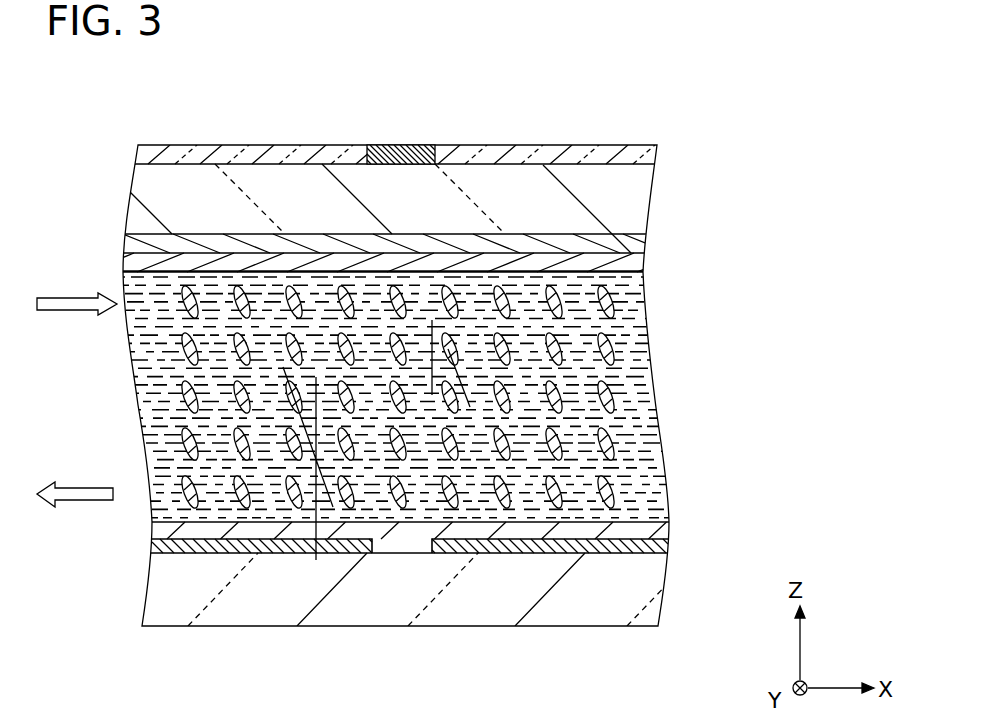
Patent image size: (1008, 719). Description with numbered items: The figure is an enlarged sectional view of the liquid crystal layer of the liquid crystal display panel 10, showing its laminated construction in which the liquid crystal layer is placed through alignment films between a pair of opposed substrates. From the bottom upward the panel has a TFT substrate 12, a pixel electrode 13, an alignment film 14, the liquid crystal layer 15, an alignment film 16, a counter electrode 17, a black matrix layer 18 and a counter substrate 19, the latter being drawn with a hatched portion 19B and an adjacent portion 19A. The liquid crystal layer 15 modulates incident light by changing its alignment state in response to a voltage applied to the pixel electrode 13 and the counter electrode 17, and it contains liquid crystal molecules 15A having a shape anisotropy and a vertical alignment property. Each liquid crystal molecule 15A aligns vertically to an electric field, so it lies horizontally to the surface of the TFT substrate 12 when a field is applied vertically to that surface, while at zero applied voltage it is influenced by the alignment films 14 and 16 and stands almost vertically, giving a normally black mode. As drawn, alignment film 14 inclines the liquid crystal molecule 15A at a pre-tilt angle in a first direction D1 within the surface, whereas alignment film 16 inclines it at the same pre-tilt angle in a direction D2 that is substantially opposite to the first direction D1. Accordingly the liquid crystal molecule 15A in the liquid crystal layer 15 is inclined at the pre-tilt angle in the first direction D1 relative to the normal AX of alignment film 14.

The liquid crystal display panel 10 is at (184, 110).
The TFT substrate 12 is at (663, 597).
The pixel electrode 13 is at (668, 550).
The alignment film 14 is at (668, 533).
The liquid crystal layer 15 is at (752, 520).
The liquid crystal molecule 15A is at (606, 450).
The alignment film 16 is at (637, 265).
The counter electrode 17 is at (637, 243).
The black matrix layer 18 is at (637, 200).
The counter substrate 19 is at (487, 93).
The color filter 19A is at (468, 152).
The light shielding layer 19B is at (404, 145).
The normal of alignment film AX is at (315, 523).
The first direction D1 is at (75, 484).
The second direction D2 is at (77, 293).